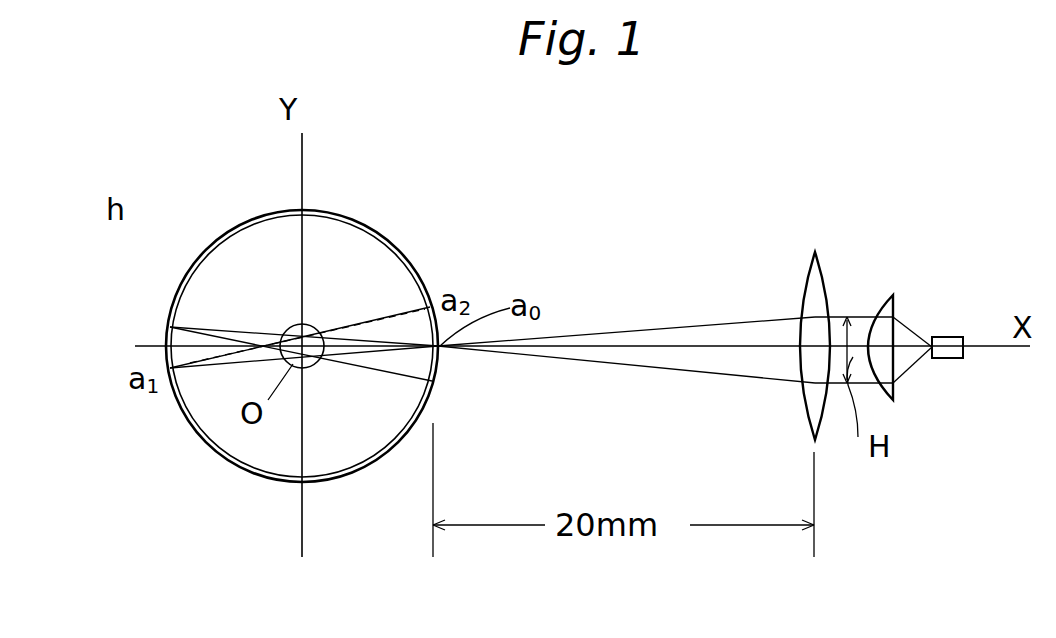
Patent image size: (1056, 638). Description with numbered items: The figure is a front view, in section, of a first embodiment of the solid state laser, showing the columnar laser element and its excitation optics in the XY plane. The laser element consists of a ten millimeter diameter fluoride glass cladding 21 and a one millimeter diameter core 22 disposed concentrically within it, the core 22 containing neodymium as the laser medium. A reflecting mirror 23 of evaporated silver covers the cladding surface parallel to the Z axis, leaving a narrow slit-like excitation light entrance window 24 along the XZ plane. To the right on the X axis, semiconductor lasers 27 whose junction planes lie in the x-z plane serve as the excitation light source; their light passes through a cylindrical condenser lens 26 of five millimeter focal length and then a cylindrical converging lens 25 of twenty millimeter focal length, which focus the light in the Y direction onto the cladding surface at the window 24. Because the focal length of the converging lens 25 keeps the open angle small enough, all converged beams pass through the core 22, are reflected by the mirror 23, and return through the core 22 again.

The cladding 21 is at (397, 277).
The core 22 is at (314, 322).
The reflecting mirror 23 is at (388, 242).
The excitation light entrance window 24 is at (440, 348).
The converging lens 25 is at (812, 262).
The condenser lens 26 is at (890, 292).
The semiconductor lasers 27 is at (950, 337).